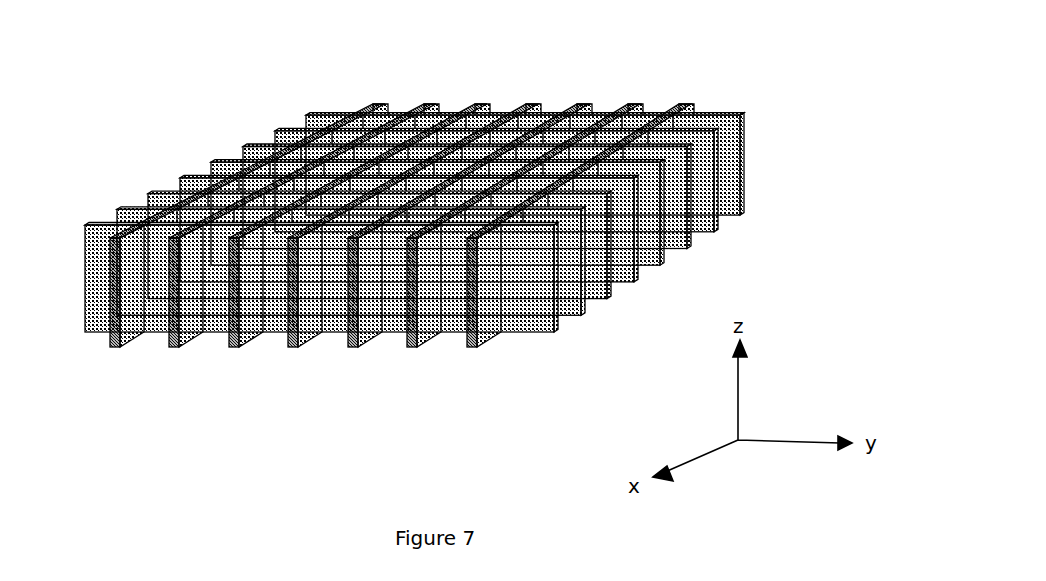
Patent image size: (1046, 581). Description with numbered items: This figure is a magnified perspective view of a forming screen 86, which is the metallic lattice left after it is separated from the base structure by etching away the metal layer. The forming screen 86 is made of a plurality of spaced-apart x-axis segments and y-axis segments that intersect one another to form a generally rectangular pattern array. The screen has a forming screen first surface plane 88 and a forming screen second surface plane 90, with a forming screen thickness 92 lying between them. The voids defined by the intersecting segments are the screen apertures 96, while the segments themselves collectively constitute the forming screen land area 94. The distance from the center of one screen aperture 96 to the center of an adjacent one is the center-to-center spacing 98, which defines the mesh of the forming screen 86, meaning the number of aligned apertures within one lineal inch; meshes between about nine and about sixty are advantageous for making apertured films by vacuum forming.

The forming screen 86 is at (420, 264).
The forming screen first surface plane 88 is at (672, 118).
The forming screen second surface plane 90 is at (146, 345).
The forming screen thickness 92 is at (56, 230).
The forming screen land area 94 is at (337, 120).
The screen aperture 96 is at (521, 127).
The center-to-center spacing 98 is at (267, 337).